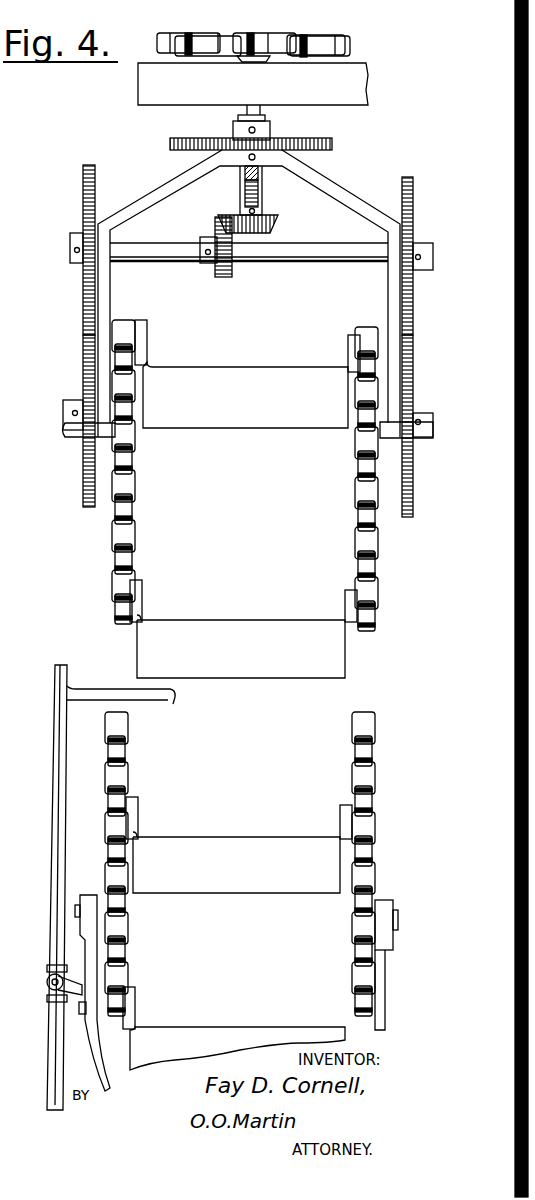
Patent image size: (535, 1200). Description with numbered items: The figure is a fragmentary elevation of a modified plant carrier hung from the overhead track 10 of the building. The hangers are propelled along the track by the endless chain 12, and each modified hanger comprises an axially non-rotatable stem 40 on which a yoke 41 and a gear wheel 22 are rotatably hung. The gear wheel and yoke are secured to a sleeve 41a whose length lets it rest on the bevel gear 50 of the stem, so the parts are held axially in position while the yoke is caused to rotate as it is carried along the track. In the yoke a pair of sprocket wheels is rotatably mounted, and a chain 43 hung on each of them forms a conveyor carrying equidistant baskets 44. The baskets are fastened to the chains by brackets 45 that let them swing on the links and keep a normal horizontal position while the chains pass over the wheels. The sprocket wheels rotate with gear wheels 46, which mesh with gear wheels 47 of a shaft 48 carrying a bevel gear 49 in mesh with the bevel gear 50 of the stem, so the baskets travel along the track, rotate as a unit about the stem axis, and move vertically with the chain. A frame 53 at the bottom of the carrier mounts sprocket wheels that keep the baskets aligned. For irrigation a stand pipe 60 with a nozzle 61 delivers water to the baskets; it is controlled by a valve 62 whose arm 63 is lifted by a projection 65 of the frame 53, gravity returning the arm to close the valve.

The track 10 is at (140, 100).
The endless chain 12 is at (340, 48).
The gear wheel 22 is at (324, 142).
The stem 40 is at (240, 189).
The yoke 41 is at (320, 183).
The sleeve 41a is at (262, 176).
The chain 43 is at (135, 530).
The basket 44 is at (250, 425).
The bracket 45 is at (148, 360).
The gear wheel 46 is at (83, 382).
The gear wheel 47 is at (83, 222).
The shaft 48 is at (152, 257).
The bevel gear 49 is at (232, 268).
The bevel gear 50 is at (280, 220).
The frame 53 is at (100, 1062).
The stand pipe 60 is at (57, 766).
The nozzle 61 is at (170, 706).
The valve 62 is at (47, 998).
The arm 63 is at (78, 982).
The projection 65 is at (82, 1016).